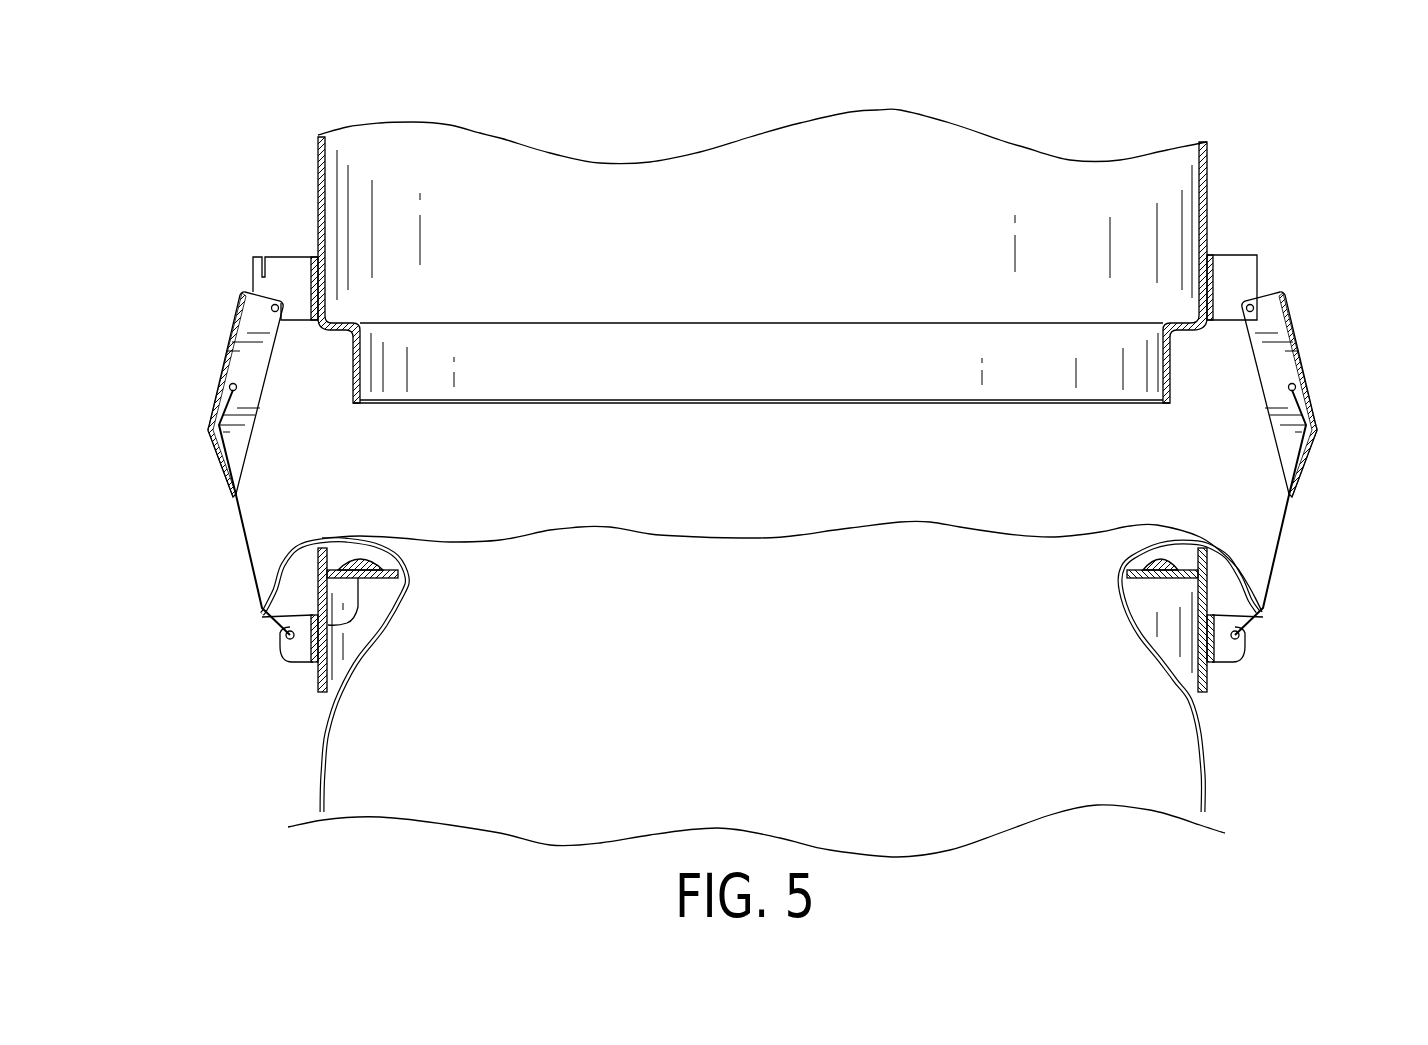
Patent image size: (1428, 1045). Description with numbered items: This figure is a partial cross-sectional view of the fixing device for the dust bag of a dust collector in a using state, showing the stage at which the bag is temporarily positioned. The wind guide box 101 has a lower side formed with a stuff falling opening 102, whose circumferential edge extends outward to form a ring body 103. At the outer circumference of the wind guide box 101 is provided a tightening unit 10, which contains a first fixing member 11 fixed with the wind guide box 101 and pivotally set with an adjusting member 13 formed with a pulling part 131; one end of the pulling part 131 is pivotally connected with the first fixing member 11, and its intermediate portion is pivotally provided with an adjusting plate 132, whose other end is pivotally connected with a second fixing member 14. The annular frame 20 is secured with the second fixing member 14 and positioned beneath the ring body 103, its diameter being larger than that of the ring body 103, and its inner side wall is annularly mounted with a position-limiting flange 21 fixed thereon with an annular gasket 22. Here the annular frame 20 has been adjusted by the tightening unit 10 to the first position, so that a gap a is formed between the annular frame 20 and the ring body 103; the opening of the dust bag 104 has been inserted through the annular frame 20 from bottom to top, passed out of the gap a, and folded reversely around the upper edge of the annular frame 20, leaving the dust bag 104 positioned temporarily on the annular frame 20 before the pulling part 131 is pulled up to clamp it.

The tightening unit 10 is at (196, 466).
The wind guide box 101 is at (1152, 182).
The stuff falling opening 102 is at (400, 318).
The ring body 103 is at (352, 350).
The dust bag 104 is at (320, 768).
The first fixing member 11 is at (295, 270).
The adjusting member 13 is at (237, 322).
The pulling part 131 is at (1300, 360).
The adjusting plate 132 is at (1287, 538).
The second fixing member 14 is at (1225, 645).
The annular frame 20 is at (1228, 678).
The position-limiting flange 21 is at (295, 625).
The annular gasket 22 is at (1153, 572).
The gap a is at (393, 512).